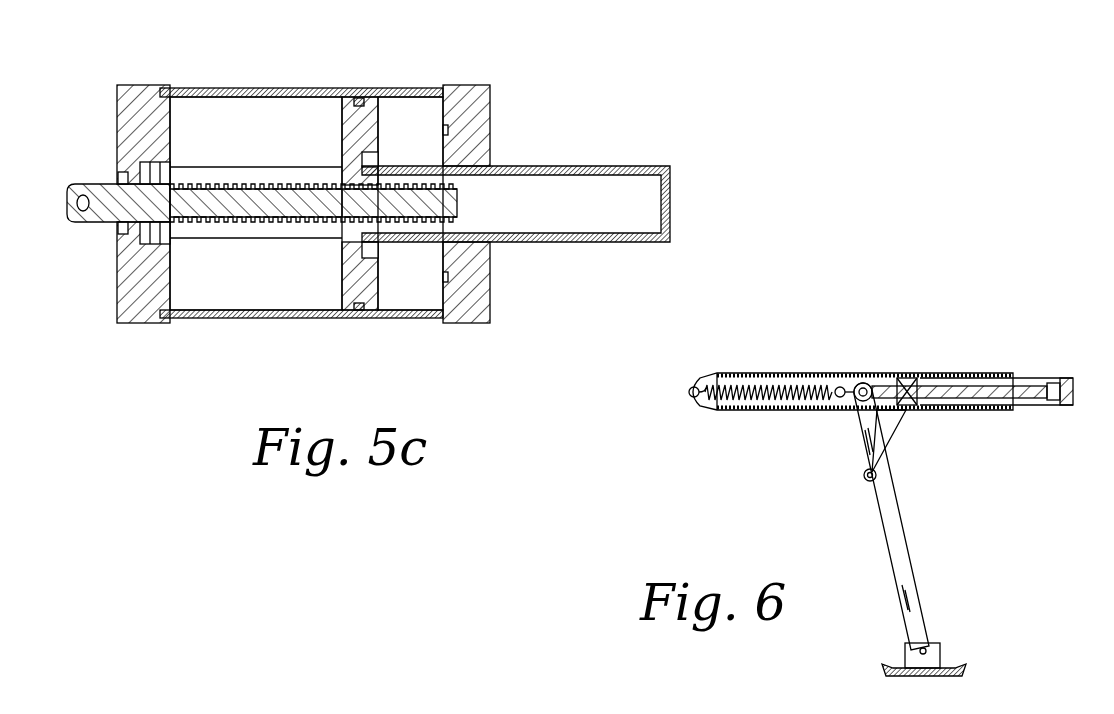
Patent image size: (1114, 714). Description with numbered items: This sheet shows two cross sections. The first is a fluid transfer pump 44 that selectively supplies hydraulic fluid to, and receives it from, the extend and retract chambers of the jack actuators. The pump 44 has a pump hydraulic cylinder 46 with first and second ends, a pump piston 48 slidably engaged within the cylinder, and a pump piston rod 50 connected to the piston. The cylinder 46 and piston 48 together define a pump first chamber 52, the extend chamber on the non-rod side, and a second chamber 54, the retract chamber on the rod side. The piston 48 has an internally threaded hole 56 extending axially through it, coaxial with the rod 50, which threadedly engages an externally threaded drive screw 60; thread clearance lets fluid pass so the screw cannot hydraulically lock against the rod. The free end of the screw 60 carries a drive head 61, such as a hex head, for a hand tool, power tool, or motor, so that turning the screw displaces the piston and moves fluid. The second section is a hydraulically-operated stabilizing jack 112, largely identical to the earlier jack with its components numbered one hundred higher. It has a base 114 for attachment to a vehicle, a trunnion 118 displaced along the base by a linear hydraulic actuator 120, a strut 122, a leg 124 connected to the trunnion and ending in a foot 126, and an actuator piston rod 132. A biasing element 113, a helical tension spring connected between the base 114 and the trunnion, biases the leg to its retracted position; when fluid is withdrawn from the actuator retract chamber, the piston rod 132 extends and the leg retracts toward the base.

In FIG. 5C, the fluid transfer pump 44 is at (355, 216).
In FIG. 5C, the pump hydraulic cylinder 46 is at (300, 88).
In FIG. 5C, the pump piston 48 is at (370, 118).
In FIG. 5C, the pump piston rod 50 is at (645, 242).
In FIG. 5C, the pump first chamber 52 is at (212, 117).
In FIG. 5C, the second chamber 54 is at (413, 285).
In FIG. 5C, the hole 56 is at (338, 226).
In FIG. 5C, the drive screw 60 is at (225, 205).
In FIG. 5C, the drive head 61 is at (105, 212).
In FIG. 6, the stabilizing jack 112 is at (889, 481).
In FIG. 6, the biasing element 113 is at (783, 398).
In FIG. 6, the base 114 is at (706, 372).
In FIG. 6, the trunnion 118 is at (861, 378).
In FIG. 6, the actuator 120 is at (958, 373).
In FIG. 6, the strut 122 is at (893, 425).
In FIG. 6, the leg 124 is at (895, 532).
In FIG. 6, the foot 126 is at (965, 672).
In FIG. 6, the actuator piston rod 132 is at (1030, 380).